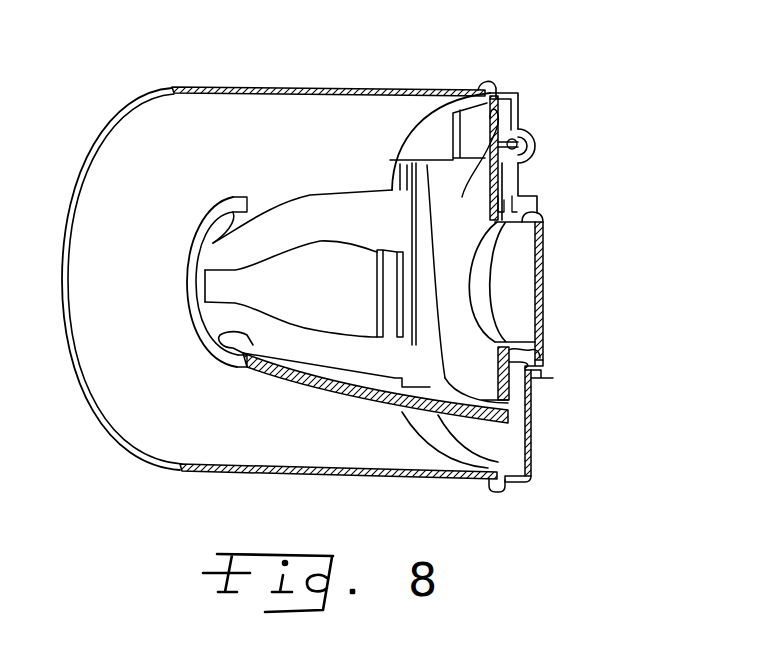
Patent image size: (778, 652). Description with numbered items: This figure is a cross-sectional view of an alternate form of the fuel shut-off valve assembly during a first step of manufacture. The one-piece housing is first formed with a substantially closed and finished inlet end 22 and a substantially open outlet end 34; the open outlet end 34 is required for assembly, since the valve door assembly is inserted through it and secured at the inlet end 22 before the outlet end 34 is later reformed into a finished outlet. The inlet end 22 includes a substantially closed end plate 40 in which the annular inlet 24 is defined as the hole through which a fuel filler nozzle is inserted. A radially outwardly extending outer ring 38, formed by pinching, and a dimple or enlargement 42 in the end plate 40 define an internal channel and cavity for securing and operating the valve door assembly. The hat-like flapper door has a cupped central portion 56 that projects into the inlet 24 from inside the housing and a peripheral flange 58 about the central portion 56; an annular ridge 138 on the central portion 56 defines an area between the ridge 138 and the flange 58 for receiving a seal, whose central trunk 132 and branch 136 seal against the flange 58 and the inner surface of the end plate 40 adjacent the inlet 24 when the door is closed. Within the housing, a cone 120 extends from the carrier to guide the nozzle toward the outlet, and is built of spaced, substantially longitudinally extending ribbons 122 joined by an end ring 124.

The substantially open outlet end 34 is at (131, 91).
The cone 120 is at (294, 167).
The ribbons 122 is at (350, 200).
The end ring 124 is at (188, 247).
The annular ridge 138 is at (485, 214).
The outer ring 38 is at (483, 85).
The inlet end 22 is at (516, 76).
The end plate 40 is at (522, 108).
The enlargement 42 is at (538, 141).
The annular inlet 24 is at (530, 216).
The cupped central portion 56 is at (543, 279).
The central trunk 132 is at (538, 348).
The branch 136 is at (542, 378).
The peripheral flange 58 is at (525, 384).